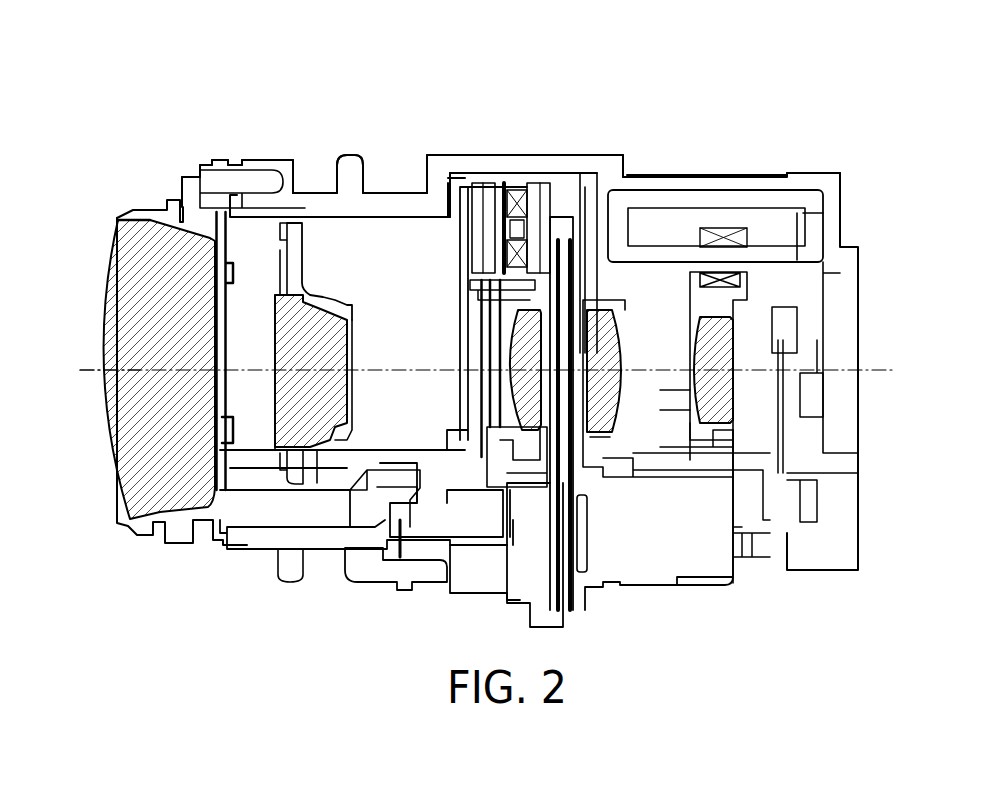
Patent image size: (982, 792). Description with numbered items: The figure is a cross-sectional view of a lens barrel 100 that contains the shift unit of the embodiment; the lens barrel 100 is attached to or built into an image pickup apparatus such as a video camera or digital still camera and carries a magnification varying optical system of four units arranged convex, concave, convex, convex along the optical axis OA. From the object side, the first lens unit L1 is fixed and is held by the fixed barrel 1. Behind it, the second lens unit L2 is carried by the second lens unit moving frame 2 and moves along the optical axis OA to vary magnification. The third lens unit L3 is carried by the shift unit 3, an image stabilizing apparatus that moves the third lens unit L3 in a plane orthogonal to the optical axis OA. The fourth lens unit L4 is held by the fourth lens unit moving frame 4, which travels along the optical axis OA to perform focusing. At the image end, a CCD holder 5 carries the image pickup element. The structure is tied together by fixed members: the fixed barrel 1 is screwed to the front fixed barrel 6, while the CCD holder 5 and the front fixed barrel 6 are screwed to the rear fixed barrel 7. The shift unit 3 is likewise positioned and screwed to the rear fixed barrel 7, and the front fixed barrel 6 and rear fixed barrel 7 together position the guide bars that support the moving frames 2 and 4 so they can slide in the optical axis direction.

The lens barrel 100 is at (746, 60).
The fixed barrel 1 is at (160, 215).
The second lens unit moving frame 2 is at (303, 250).
The shift unit 3 is at (488, 292).
The fourth lens unit moving frame 4 is at (717, 310).
The CCD holder 5 is at (815, 182).
The front fixed barrel 6 is at (358, 165).
The rear fixed barrel 7 is at (542, 173).
The first lens unit L1 is at (128, 327).
The second lens unit L2 is at (338, 342).
The third lens unit L3 is at (518, 335).
The fourth lens unit L4 is at (718, 342).
The optical axis OA is at (92, 372).